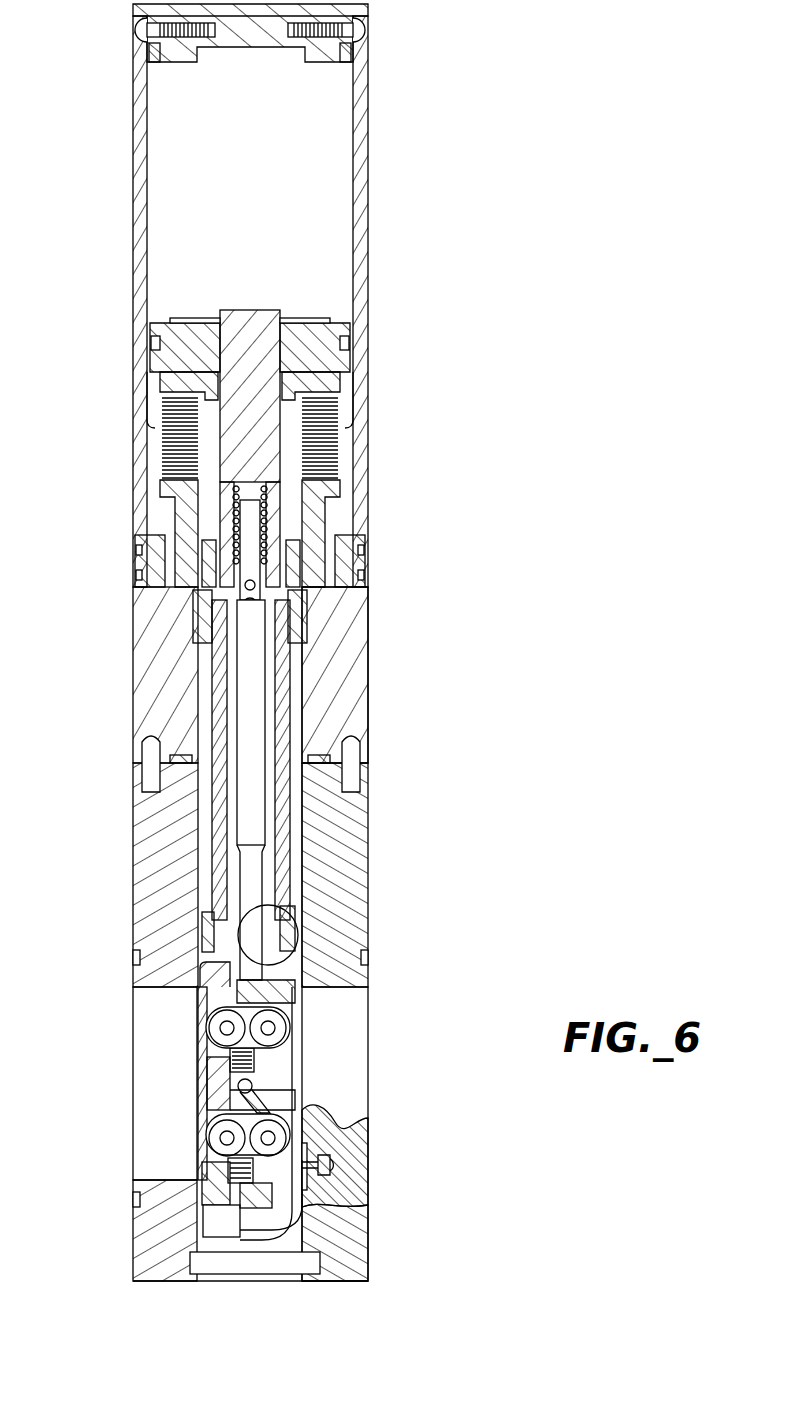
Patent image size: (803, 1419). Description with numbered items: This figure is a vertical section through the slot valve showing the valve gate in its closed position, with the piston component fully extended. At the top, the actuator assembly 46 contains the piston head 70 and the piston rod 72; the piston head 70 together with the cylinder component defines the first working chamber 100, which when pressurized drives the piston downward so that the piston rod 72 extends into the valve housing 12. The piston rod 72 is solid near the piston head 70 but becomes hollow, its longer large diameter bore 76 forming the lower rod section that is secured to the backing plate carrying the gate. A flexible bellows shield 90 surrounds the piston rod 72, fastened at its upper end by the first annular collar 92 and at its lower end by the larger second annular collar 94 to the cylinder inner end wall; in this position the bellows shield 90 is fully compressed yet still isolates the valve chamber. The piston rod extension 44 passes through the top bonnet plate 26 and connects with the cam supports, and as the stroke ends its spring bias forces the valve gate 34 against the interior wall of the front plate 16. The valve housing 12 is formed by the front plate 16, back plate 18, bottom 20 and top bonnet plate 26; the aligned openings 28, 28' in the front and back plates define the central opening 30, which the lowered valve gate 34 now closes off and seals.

The first working chamber 100 is at (342, 158).
The actuator assembly 46 is at (110, 332).
The piston rod 72 is at (262, 310).
The piston head 70 is at (352, 330).
The first annular collar 92 is at (358, 372).
The bellows shield 90 is at (355, 463).
The second annular collar 94 is at (358, 505).
The valve housing 12 is at (132, 632).
The top bonnet plate 26 is at (365, 680).
The large diameter bore 76 is at (288, 860).
The piston rod extension 44 is at (275, 750).
The front plate 16 is at (130, 862).
The back plate 18 is at (363, 905).
The front aligned opening 28 is at (138, 1134).
The back aligned opening 28' is at (370, 1134).
The valve gate 34 is at (197, 1072).
The central opening 30 is at (158, 1136).
The bottom 20 is at (145, 1285).